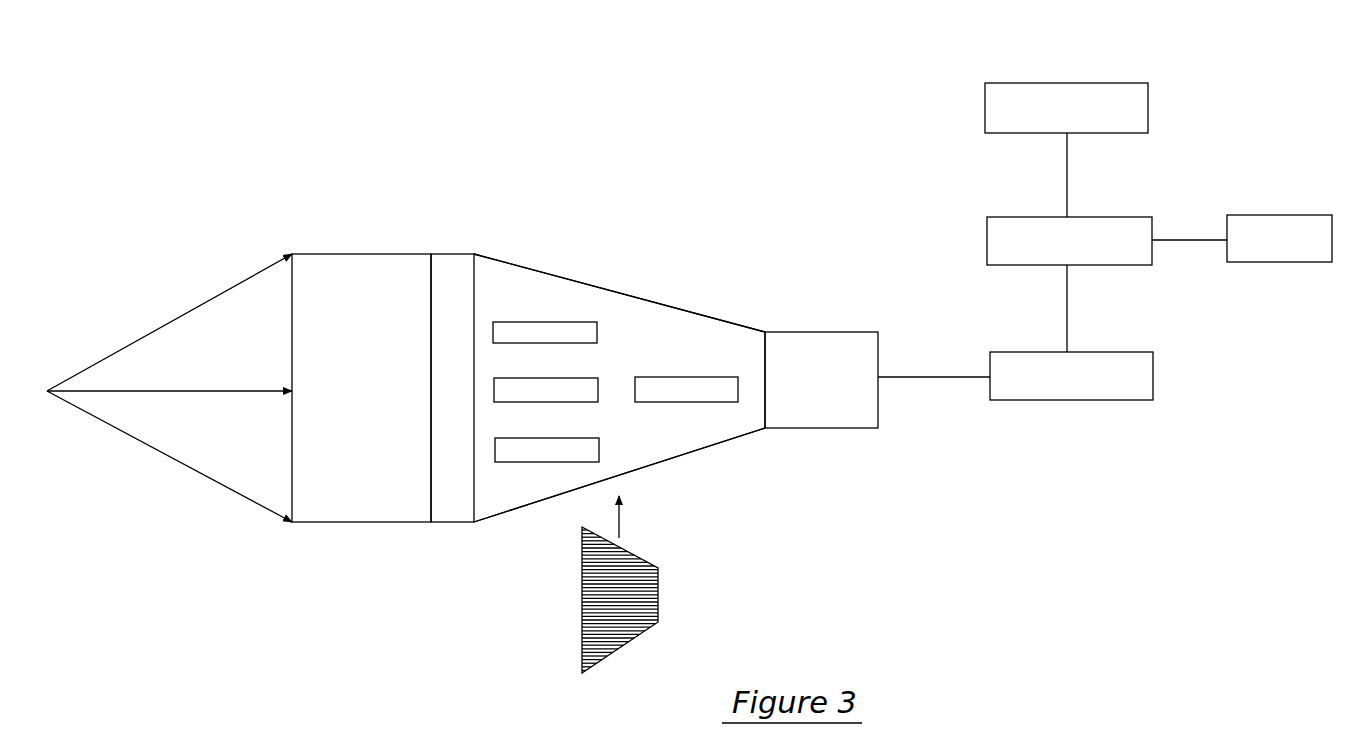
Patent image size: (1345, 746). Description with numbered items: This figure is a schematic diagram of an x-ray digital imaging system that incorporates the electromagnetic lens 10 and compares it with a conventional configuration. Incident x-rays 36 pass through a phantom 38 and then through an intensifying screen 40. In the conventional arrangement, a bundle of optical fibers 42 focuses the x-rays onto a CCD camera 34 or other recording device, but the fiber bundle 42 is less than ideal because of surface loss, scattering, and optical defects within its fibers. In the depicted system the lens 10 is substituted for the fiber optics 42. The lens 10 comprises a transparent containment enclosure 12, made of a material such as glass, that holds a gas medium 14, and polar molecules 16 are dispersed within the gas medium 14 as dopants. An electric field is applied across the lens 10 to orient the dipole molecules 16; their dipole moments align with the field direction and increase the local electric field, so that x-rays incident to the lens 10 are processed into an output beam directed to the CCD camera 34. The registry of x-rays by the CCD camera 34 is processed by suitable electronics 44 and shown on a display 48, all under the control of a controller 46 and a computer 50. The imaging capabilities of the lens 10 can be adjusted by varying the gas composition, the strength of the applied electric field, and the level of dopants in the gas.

The electromagnetic lens 10 is at (557, 262).
The containment enclosure 12 is at (580, 280).
The gas medium 14 is at (687, 441).
The polar molecules 16 is at (528, 463).
The CCD camera 34 is at (826, 430).
The x-rays 36 is at (190, 310).
The phantom 38 is at (361, 526).
The intensifying screen 40 is at (452, 253).
The bundle of optical fibers 42 is at (625, 638).
The electronics 44 is at (1085, 401).
The controller 46 is at (1110, 217).
The display 48 is at (1075, 83).
The computer 50 is at (1275, 263).